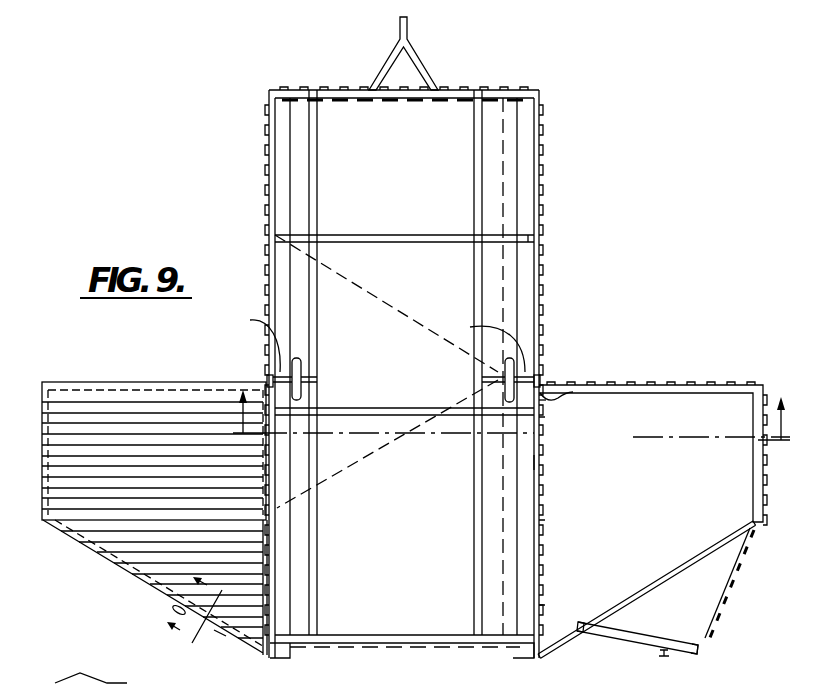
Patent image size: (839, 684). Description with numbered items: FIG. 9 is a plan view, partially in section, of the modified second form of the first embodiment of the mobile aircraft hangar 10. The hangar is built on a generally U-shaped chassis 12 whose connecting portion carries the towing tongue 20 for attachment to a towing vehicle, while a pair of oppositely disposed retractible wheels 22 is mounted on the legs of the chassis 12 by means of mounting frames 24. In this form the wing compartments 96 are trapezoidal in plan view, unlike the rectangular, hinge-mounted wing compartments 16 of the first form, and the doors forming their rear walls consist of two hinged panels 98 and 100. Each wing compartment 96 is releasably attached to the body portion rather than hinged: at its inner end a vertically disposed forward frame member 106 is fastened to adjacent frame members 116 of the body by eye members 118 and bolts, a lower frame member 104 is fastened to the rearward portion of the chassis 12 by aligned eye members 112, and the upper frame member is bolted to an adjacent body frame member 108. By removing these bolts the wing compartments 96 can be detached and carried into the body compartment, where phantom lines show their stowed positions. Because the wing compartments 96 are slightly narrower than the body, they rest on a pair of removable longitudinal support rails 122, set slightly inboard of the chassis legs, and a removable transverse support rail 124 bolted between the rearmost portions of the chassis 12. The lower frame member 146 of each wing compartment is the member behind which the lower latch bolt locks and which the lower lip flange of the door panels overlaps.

The towing tongue 20 is at (413, 52).
The chassis 12 is at (522, 527).
The longitudinal support rails 122 is at (477, 557).
The transverse support rail 124 is at (368, 637).
The retractible wheels 22 is at (505, 380).
The mounting frames 24 is at (376, 340).
The frame members 116 is at (535, 346).
The mobile aircraft hangar 10 is at (511, 415).
The wing compartments 96 is at (156, 378).
The hinged door panel 98 is at (98, 552).
The lower frame member 146 is at (687, 560).
The hinged door panel 100 is at (633, 637).
The forward frame member 106 is at (573, 392).
The eye members 118 is at (543, 407).
The eye members 112 is at (540, 420).
The lower frame member 104 is at (538, 463).
The wing compartments 16 is at (206, 622).
The frame member 108 is at (28, 683).